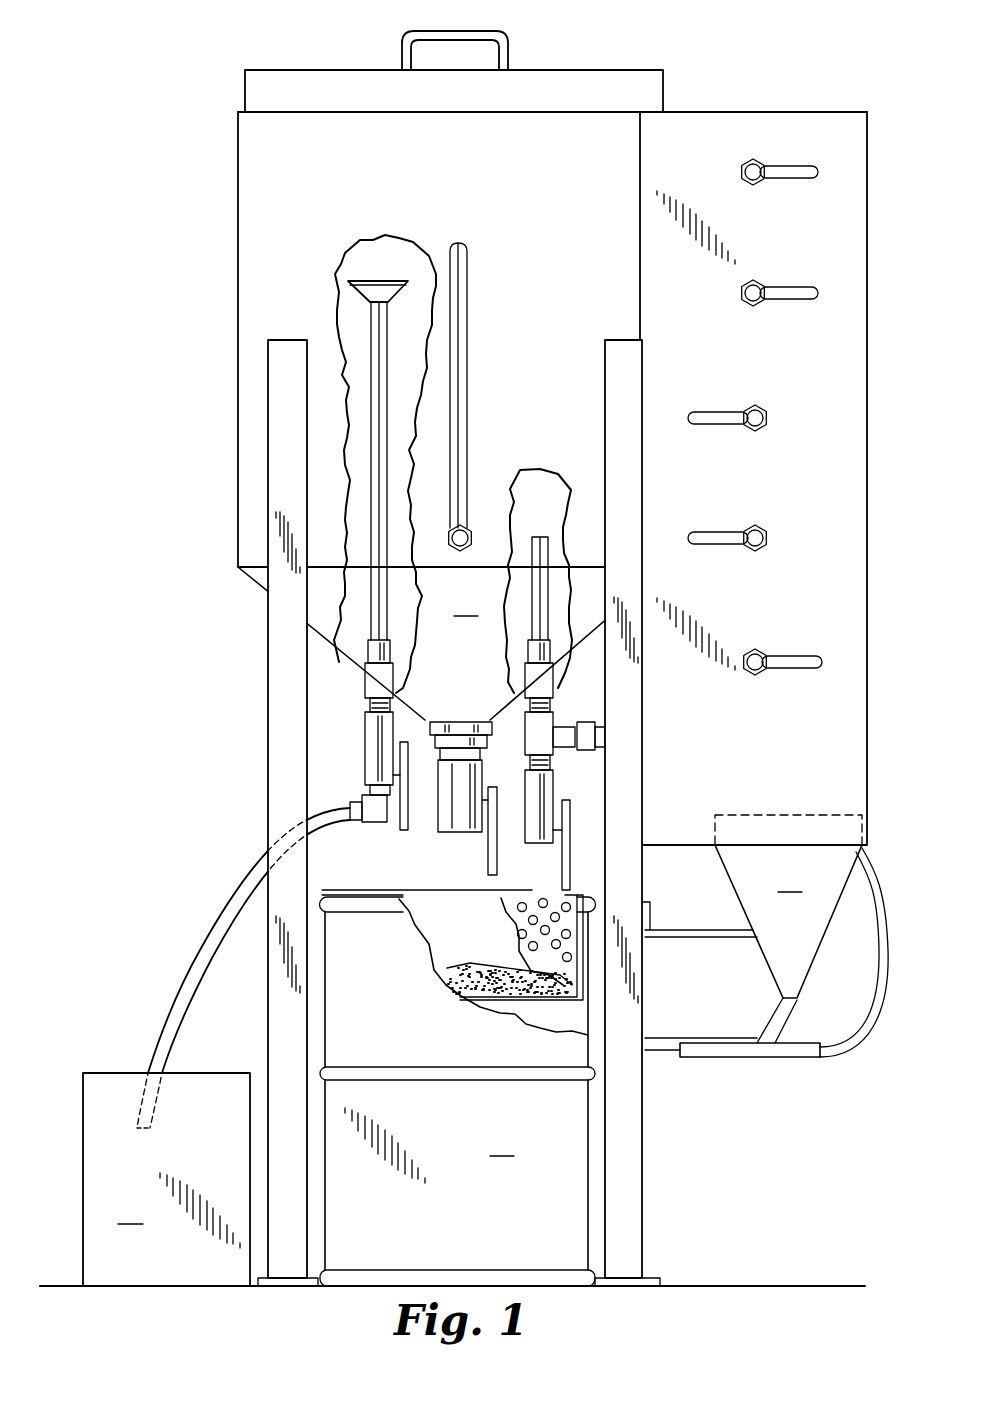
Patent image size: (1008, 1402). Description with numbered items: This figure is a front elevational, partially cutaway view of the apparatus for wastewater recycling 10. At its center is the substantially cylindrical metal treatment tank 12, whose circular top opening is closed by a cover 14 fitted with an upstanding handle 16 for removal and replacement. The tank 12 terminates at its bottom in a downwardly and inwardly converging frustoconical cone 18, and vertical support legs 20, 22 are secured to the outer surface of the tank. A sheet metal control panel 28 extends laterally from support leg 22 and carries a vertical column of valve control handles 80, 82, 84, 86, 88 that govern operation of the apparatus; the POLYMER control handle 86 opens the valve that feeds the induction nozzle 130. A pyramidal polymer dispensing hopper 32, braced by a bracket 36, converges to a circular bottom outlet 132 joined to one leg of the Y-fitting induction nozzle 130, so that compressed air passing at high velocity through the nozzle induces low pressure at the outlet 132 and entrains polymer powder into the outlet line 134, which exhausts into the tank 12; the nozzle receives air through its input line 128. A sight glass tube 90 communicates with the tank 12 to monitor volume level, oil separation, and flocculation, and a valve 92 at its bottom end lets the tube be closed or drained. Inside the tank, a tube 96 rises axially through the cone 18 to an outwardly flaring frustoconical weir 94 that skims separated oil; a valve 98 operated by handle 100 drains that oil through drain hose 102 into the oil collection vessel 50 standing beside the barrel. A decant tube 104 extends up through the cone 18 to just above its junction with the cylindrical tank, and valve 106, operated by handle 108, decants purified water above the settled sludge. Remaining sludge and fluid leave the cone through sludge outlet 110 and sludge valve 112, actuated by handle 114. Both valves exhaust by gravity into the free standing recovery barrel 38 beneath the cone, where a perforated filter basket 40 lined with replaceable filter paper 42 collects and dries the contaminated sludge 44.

The apparatus for wastewater recycling 10 is at (150, 135).
The treatment tank 12 is at (244, 176).
The cover 14 is at (244, 78).
The handle 16 is at (505, 33).
The cone 18 is at (439, 643).
The support leg 20 is at (266, 706).
The support leg 22 is at (642, 1174).
The control panel 28 is at (726, 106).
The polymer dispensing hopper 32 is at (788, 906).
The bracket 36 is at (714, 930).
The recovery barrel 38 is at (458, 1088).
The filter basket 40 is at (520, 998).
The filter paper 42 is at (432, 918).
The contaminated sludge 44 is at (470, 984).
The oil collection vessel 50 is at (166, 1118).
The valve control handle 80 is at (778, 172).
The valve control handle 82 is at (778, 294).
The valve control handle 84 is at (700, 414).
The POLYMER control handle 86 is at (700, 534).
The valve control handle 88 is at (778, 662).
The sight glass tube 90 is at (466, 332).
The valve 92 is at (484, 506).
The weir 94 is at (354, 292).
The tube 96 is at (370, 322).
The valve 98 is at (374, 756).
The handle 100 is at (400, 824).
The drain hose 102 is at (244, 874).
The decant tube 104 is at (540, 536).
The valve 106 is at (544, 778).
The handle 108 is at (572, 824).
The sludge outlet 110 is at (450, 694).
The sludge valve 112 is at (456, 822).
The handle 114 is at (498, 846).
The input line 128 is at (864, 1030).
The induction nozzle 130 is at (726, 1060).
The bottom outlet 132 is at (782, 1020).
The outlet line 134 is at (652, 1036).